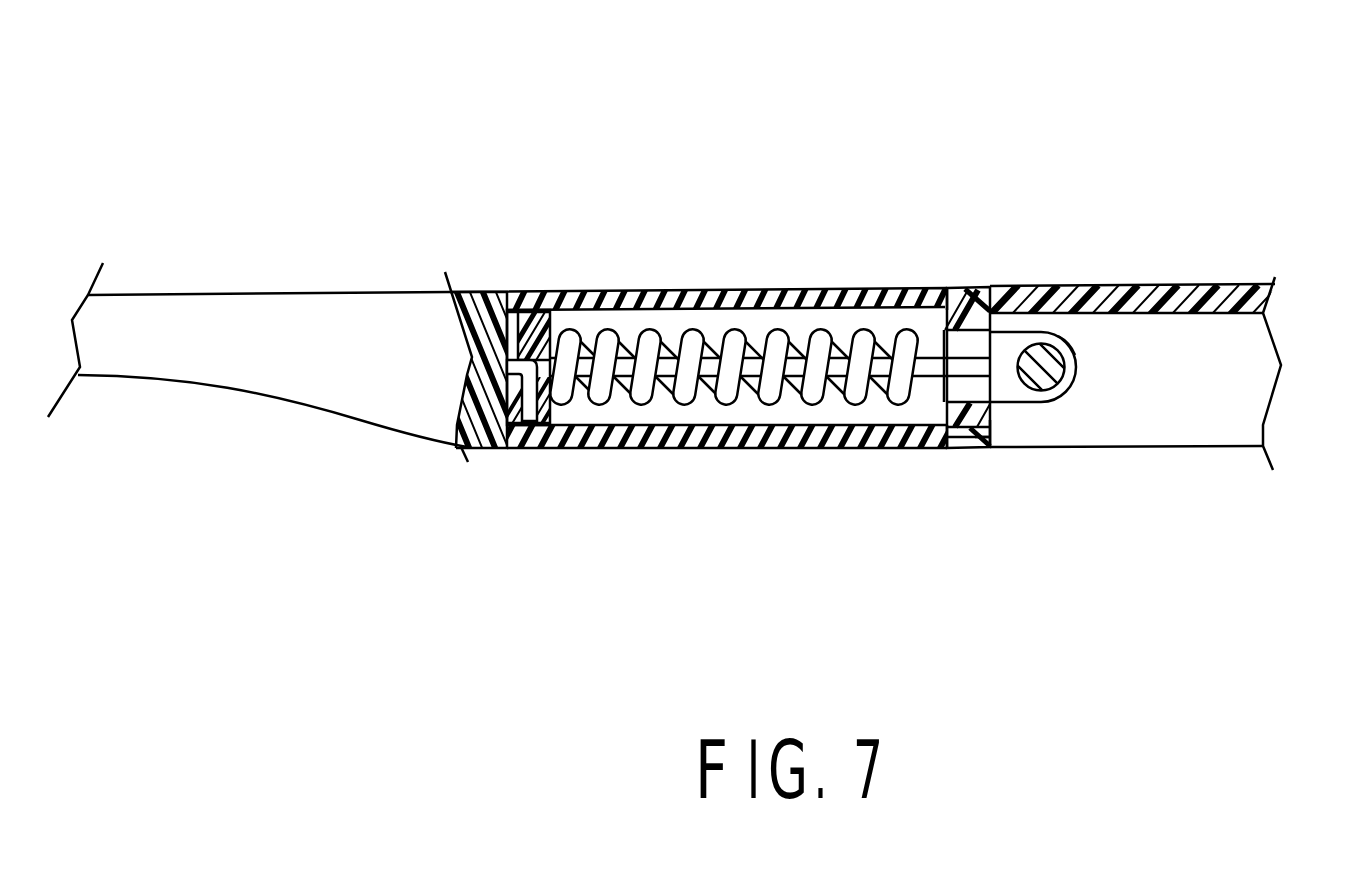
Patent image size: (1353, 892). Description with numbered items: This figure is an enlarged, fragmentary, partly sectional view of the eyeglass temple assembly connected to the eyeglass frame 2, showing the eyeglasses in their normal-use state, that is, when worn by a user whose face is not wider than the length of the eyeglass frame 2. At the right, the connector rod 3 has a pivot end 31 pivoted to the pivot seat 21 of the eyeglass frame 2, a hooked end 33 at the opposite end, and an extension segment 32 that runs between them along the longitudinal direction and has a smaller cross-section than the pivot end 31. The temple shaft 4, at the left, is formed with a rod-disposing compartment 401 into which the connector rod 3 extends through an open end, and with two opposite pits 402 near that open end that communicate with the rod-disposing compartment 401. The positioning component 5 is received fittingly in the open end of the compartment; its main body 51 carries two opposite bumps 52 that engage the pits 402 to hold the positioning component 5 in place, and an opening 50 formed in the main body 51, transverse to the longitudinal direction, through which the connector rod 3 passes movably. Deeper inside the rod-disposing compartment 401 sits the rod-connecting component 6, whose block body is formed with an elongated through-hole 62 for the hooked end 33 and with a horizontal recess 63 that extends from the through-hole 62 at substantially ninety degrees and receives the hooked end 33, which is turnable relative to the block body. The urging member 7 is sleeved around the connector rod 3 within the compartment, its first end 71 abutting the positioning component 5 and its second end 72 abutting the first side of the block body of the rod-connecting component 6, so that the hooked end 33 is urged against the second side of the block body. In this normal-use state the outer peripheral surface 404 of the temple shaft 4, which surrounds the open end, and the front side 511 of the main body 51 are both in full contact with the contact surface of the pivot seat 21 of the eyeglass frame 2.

The eyeglass frame 2 is at (1190, 286).
The pivot seat 21 is at (1260, 290).
The connector rod 3 is at (1052, 397).
The pivot end 31 is at (1076, 375).
The extension segment 32 is at (705, 376).
The hooked end 33 is at (518, 446).
The temple shaft 4 is at (375, 303).
The rod-disposing compartment 401 is at (667, 317).
The pits 402 is at (965, 288).
The outer peripheral surface 404 is at (985, 425).
The positioning component 5 is at (945, 320).
The opening 50 is at (978, 345).
The main body 51 is at (948, 412).
The front side 511 is at (987, 410).
The bumps 52 is at (977, 288).
The rod-connecting component 6 is at (518, 310).
The elongated through-hole 62 is at (537, 293).
The horizontal recess 63 is at (550, 424).
The urging member 7 is at (742, 282).
The first end 71 is at (935, 358).
The second end 72 is at (565, 330).